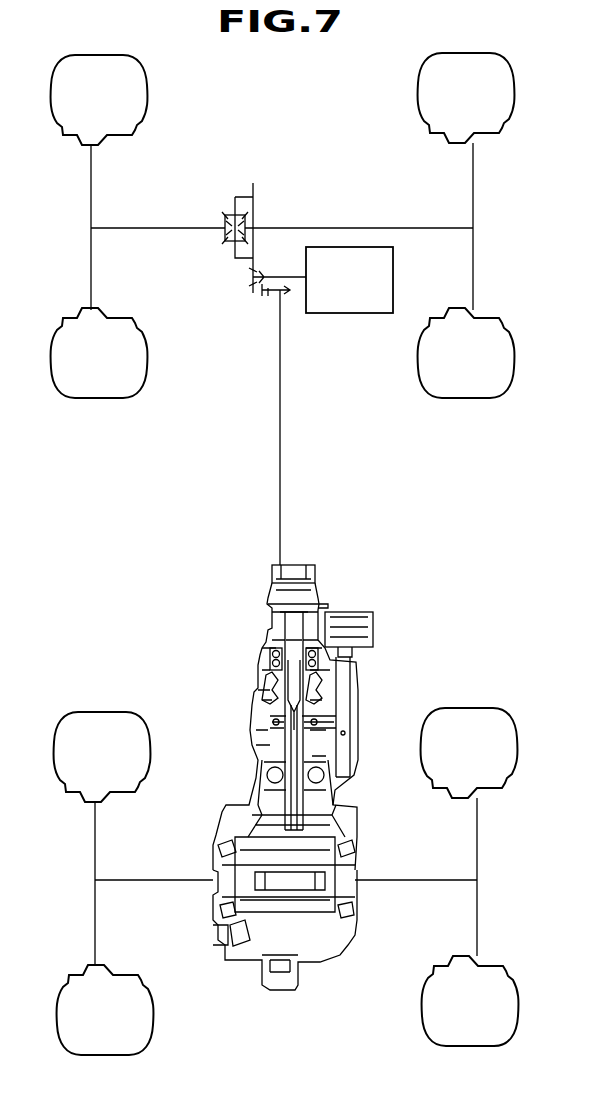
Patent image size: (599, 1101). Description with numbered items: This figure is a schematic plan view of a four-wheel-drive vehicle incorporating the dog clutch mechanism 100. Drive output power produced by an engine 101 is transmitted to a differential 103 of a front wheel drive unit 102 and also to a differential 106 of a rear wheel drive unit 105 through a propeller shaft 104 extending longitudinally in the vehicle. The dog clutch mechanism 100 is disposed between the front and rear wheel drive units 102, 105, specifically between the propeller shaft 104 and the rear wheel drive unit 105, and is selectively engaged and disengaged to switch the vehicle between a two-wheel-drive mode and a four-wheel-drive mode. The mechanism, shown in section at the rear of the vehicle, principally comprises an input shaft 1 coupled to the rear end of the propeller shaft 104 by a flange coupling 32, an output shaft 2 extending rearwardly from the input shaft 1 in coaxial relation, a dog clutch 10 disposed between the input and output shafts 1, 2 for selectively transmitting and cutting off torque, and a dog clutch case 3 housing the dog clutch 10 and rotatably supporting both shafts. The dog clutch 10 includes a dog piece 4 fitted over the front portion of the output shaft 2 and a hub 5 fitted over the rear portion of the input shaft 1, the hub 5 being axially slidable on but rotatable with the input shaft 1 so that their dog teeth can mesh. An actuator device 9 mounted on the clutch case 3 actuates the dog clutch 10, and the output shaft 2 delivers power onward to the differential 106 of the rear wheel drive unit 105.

The input shaft 1 is at (292, 636).
The output shaft 2 is at (288, 763).
The dog clutch case 3 is at (263, 672).
The dog piece 4 is at (312, 742).
The hub 5 is at (255, 700).
The actuator device 9 is at (351, 693).
The dog clutch 10 is at (280, 716).
The flange coupling 32 is at (328, 603).
The dog clutch mechanism 100 is at (246, 787).
The engine 101 is at (348, 315).
The front wheel drive unit 102 is at (285, 215).
The differential 103 is at (231, 213).
The propeller shaft 104 is at (280, 446).
The rear wheel drive unit 105 is at (369, 854).
The differential 106 is at (302, 912).